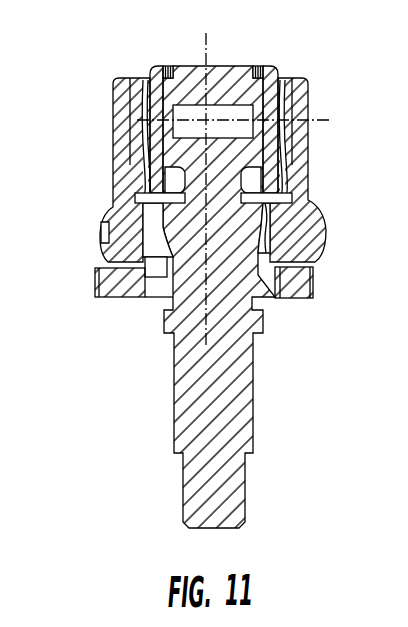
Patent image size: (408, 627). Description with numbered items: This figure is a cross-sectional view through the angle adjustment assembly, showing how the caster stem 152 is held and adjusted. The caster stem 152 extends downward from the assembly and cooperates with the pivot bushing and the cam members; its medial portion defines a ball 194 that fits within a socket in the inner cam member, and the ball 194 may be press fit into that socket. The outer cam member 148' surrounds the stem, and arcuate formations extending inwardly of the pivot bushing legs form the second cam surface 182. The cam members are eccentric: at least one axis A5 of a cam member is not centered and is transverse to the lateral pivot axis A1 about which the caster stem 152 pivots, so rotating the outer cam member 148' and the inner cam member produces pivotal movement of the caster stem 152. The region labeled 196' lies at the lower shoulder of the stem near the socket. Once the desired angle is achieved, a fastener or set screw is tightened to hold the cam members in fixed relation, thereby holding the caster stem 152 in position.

The second cam surface 182 is at (252, 170).
The outer cam member 148' is at (173, 170).
The caster stem 152 is at (80, 284).
The ball 194 is at (259, 218).
The seat 196' is at (126, 300).
The axis A5 is at (208, 53).
The lateral pivot axis A1 is at (320, 117).